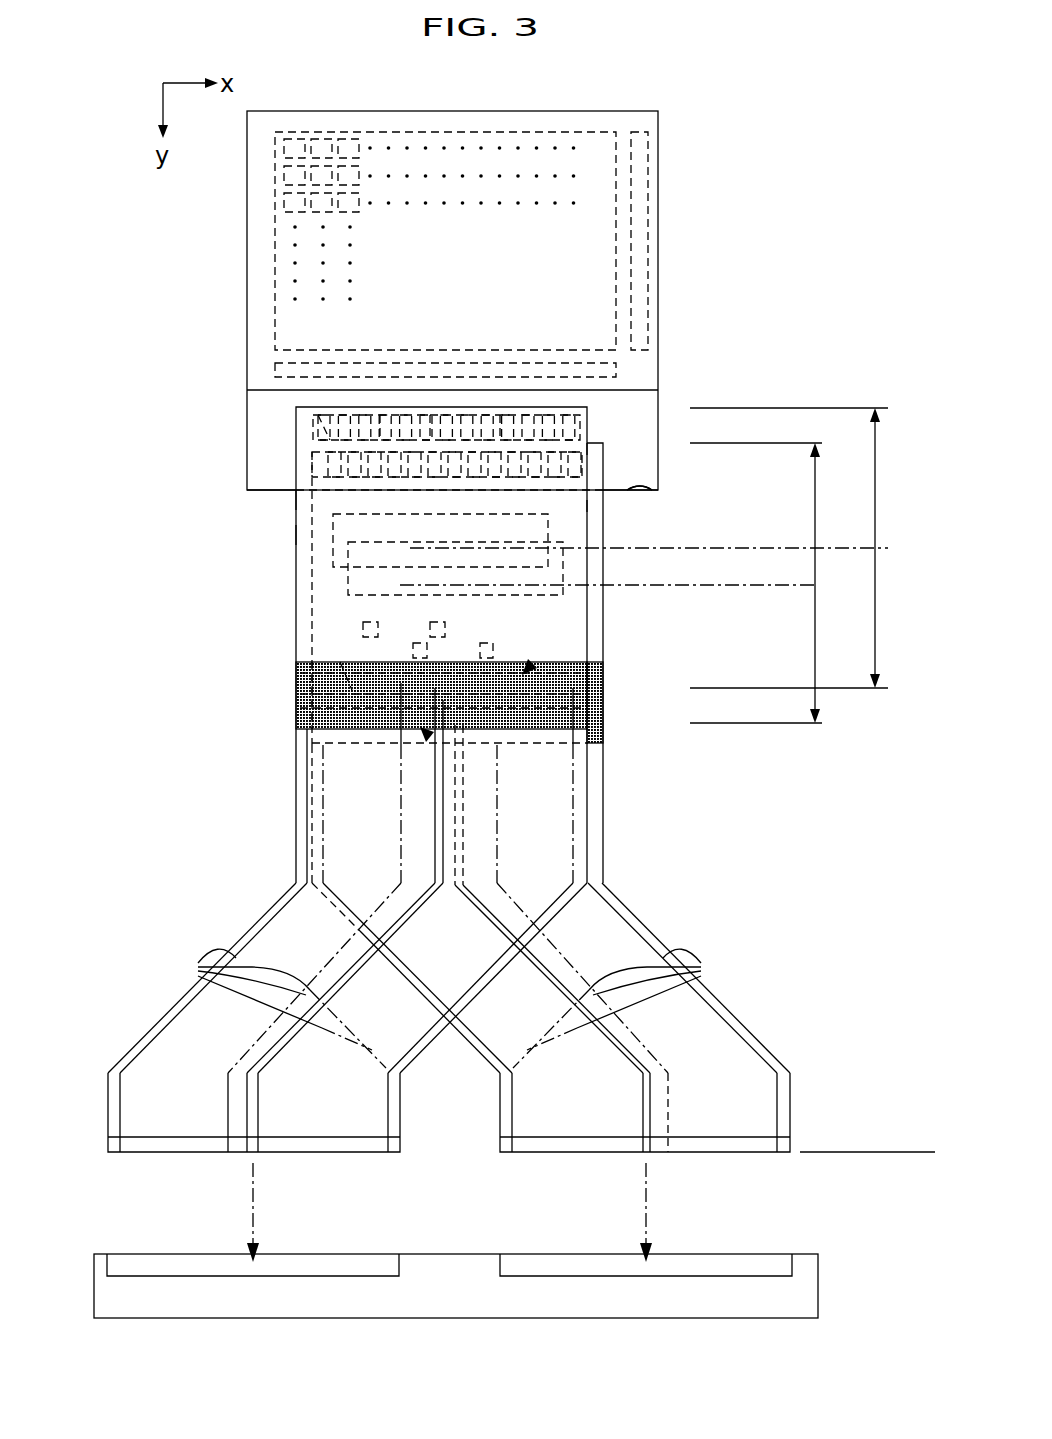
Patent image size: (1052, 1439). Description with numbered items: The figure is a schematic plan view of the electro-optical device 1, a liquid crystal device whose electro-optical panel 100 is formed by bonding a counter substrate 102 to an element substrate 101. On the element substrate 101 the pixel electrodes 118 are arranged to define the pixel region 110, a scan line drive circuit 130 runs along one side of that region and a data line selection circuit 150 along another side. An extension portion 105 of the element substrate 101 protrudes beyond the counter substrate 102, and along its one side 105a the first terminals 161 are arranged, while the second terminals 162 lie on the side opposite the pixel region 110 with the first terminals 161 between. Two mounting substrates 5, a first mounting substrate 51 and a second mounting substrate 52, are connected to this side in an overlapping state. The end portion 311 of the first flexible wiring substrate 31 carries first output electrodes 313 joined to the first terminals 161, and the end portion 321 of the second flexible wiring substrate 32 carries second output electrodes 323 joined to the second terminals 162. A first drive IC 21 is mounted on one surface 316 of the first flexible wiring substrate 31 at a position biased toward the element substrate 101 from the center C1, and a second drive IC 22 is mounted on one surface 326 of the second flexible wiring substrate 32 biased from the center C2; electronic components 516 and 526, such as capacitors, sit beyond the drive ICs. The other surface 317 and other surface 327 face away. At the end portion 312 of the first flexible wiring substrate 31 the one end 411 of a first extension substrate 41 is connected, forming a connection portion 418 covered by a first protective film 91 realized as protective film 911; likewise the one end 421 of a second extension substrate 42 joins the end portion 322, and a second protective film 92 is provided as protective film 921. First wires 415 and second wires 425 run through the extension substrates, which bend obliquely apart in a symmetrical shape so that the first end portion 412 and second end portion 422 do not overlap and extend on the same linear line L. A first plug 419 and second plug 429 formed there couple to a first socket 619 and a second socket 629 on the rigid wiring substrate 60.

The electro-optical device 1 is at (499, 267).
The electro-optical panel 100 is at (668, 172).
The counter substrate 102 is at (262, 236).
The pixel region 110 is at (429, 179).
The pixel electrodes 118 is at (323, 150).
The scan line drive circuit 130 is at (640, 268).
The data line selection circuit 150 is at (618, 378).
The element substrate 101 is at (248, 484).
The extension portion 105 is at (643, 471).
The one side 105a is at (652, 492).
The first terminals 161 is at (318, 417).
The second terminals 162 is at (330, 455).
The end portion 311 is at (343, 405).
The first output electrodes 313 is at (434, 412).
The end portion 321 is at (385, 412).
The second output electrodes 323 is at (495, 412).
The one surface 316 is at (294, 536).
The other surface 317 is at (298, 498).
The one surface 326 is at (600, 452).
The other surface 327 is at (594, 506).
The first flexible wiring substrate 31 is at (292, 524).
The second flexible wiring substrate 32 is at (601, 601).
The first drive IC 21 is at (333, 548).
The second drive IC 22 is at (596, 563).
The mounting substrates 5 is at (450, 645).
The first mounting substrate 51 is at (375, 645).
The second mounting substrate 52 is at (670, 663).
The end portion 312 is at (296, 660).
The end portion 322 is at (352, 662).
The connection portion 418 is at (527, 668).
The one end 411 is at (600, 667).
The one end 421 is at (607, 708).
The first protective film 91 is at (417, 709).
The protective film 911 is at (417, 709).
The second protective film 92 is at (663, 717).
The protective film 921 is at (663, 717).
The electronic components 516 is at (370, 637).
The electronic components 526 is at (487, 658).
The first extension substrate 41 is at (305, 946).
The second extension substrate 42 is at (581, 948).
The first wires 415 is at (198, 962).
The second wires 425 is at (657, 1008).
The first end portion 412 is at (212, 1141).
The first plug 419 is at (112, 1153).
The second end portion 422 is at (675, 1141).
The second plug 429 is at (785, 1153).
The wiring substrate 60 is at (487, 1314).
The first socket 619 is at (343, 1271).
The second socket 629 is at (612, 1271).
The center C1 is at (665, 549).
The center C2 is at (630, 586).
The linear line L is at (867, 1139).